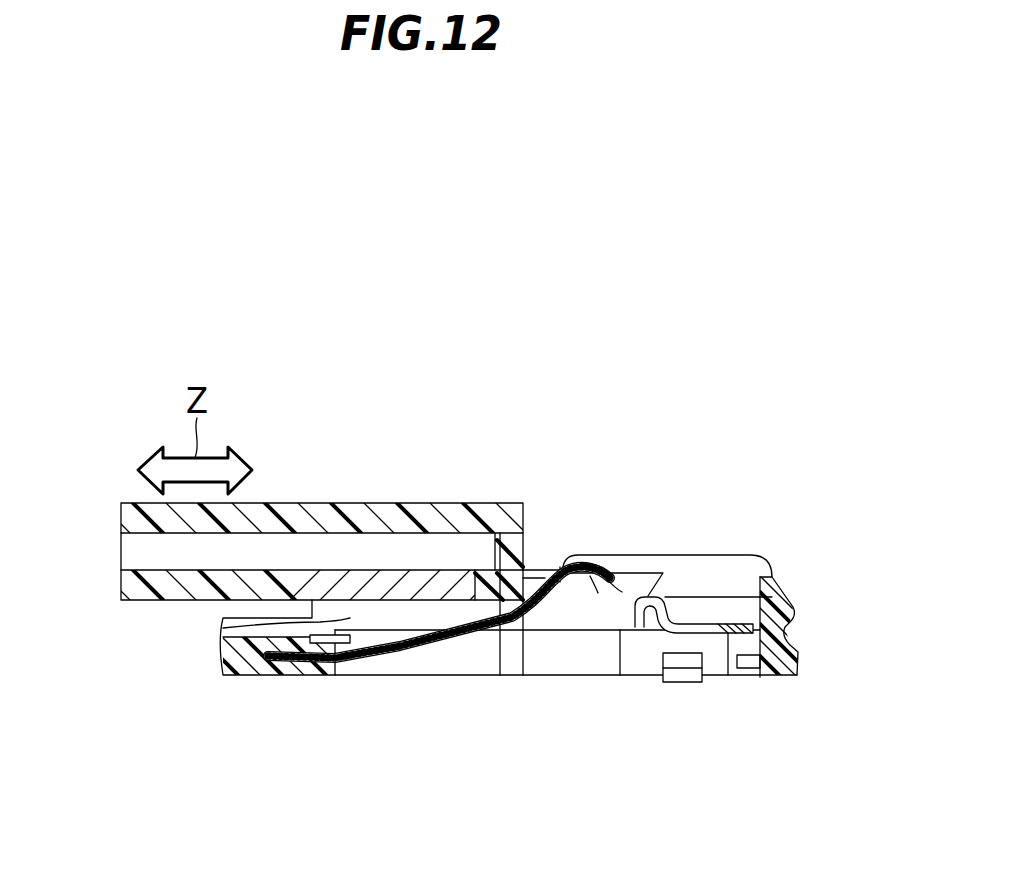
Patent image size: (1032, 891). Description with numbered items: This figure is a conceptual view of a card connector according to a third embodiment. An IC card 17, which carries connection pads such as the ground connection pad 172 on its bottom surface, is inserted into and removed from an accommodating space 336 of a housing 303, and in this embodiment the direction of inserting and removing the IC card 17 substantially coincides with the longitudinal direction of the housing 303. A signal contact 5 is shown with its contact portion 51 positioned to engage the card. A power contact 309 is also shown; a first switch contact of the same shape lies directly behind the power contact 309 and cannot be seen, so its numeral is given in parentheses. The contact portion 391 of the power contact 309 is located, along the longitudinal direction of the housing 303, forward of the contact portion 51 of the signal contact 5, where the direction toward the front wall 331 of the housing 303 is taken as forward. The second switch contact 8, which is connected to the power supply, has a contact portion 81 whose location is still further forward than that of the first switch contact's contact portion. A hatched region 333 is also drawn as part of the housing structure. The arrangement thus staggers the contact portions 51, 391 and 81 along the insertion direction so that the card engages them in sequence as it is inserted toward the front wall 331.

The IC card 17 is at (385, 497).
The ground connection pad 172 is at (424, 580).
The signal contact 5 is at (543, 580).
The contact portion 51 is at (565, 567).
The contact portion 391 is at (610, 582).
The second switch contact 8 is at (717, 623).
The contact portion 81 is at (657, 606).
The front wall 331 is at (748, 645).
The accommodating space 336 is at (378, 614).
The housing 303 is at (360, 683).
The hatched base block 333 is at (443, 658).
The power contact 309 is at (550, 620).